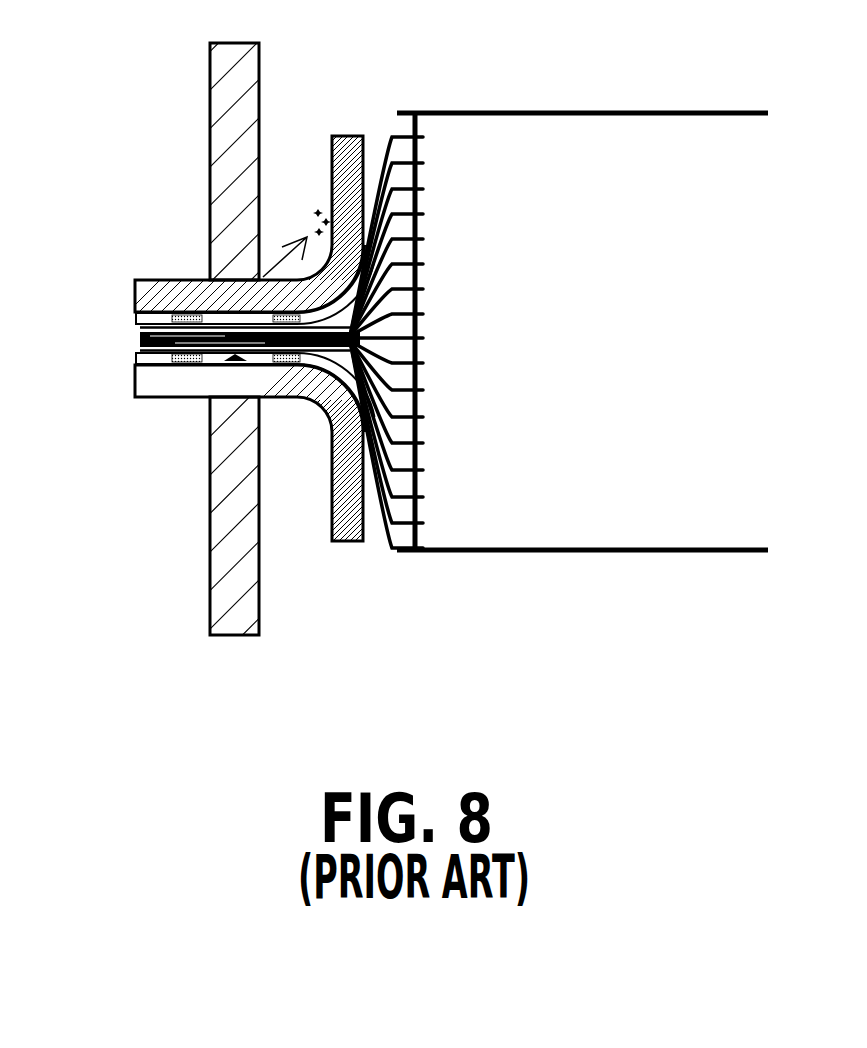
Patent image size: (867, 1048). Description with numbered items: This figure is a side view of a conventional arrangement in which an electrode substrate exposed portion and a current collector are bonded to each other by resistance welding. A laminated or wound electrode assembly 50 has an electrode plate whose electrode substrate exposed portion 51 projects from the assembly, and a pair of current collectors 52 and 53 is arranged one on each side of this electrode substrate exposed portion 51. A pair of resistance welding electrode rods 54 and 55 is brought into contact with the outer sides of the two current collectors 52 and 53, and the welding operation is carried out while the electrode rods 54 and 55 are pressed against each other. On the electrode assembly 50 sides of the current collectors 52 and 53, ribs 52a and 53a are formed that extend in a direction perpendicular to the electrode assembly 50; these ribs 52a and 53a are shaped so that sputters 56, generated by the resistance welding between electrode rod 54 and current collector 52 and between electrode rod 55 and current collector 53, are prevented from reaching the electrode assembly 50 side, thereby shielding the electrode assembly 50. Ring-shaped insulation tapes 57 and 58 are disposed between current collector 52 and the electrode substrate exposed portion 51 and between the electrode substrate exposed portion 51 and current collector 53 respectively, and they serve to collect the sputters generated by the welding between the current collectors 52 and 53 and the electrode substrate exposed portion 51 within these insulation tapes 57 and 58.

The electrode assembly 50 is at (744, 522).
The electrode substrate exposed portion 51 is at (401, 152).
The current collector 52 is at (152, 291).
The rib 52a is at (346, 145).
The current collector 53 is at (157, 387).
The rib 53a is at (345, 533).
The resistance welding electrode rod 54 is at (228, 63).
The resistance welding electrode rod 55 is at (228, 617).
The sputters 56 is at (318, 206).
The ring-shaped insulation tape 57 is at (177, 318).
The ring-shaped insulation tape 58 is at (183, 360).